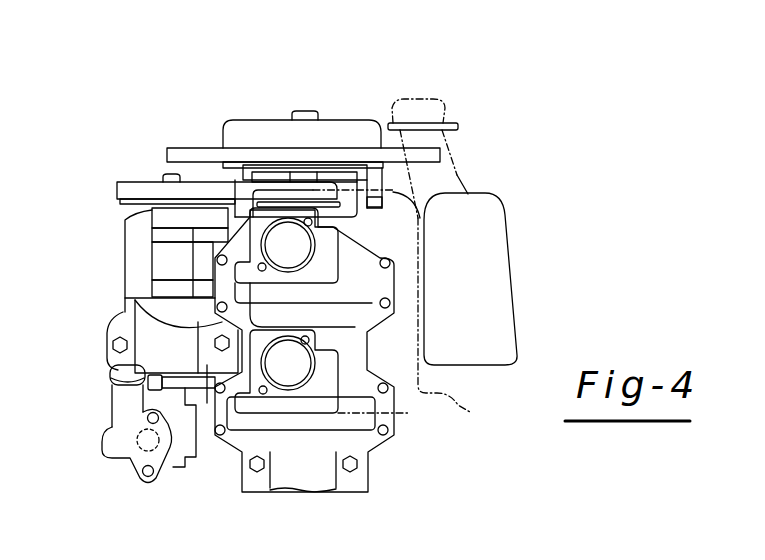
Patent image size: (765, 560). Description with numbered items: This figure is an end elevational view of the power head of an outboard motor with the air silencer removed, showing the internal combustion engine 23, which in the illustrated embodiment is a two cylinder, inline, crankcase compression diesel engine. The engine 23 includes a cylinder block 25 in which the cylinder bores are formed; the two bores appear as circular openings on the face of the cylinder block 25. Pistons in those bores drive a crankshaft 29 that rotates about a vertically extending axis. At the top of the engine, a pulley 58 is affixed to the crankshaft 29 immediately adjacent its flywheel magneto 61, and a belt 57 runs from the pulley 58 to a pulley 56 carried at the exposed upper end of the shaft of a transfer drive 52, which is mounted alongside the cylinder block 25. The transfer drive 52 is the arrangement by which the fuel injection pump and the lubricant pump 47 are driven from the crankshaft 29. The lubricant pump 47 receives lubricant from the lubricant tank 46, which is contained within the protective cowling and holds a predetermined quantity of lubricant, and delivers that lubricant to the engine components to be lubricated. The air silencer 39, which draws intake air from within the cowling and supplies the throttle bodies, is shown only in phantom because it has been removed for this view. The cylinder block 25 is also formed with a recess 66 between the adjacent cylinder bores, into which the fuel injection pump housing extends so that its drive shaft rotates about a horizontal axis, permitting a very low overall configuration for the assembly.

The internal combustion engine 23 is at (243, 117).
The crankshaft 29 is at (312, 110).
The flywheel magneto 61 is at (358, 121).
The pulley 58 is at (357, 192).
The lubricant tank 46 is at (512, 275).
The air silencer 39 is at (470, 412).
The belt 57 is at (234, 184).
The pulley 56 is at (122, 182).
The transfer drive 52 is at (163, 258).
The recess 66 is at (135, 300).
The lubricant pump 47 is at (118, 403).
The cylinder block 25 is at (369, 450).